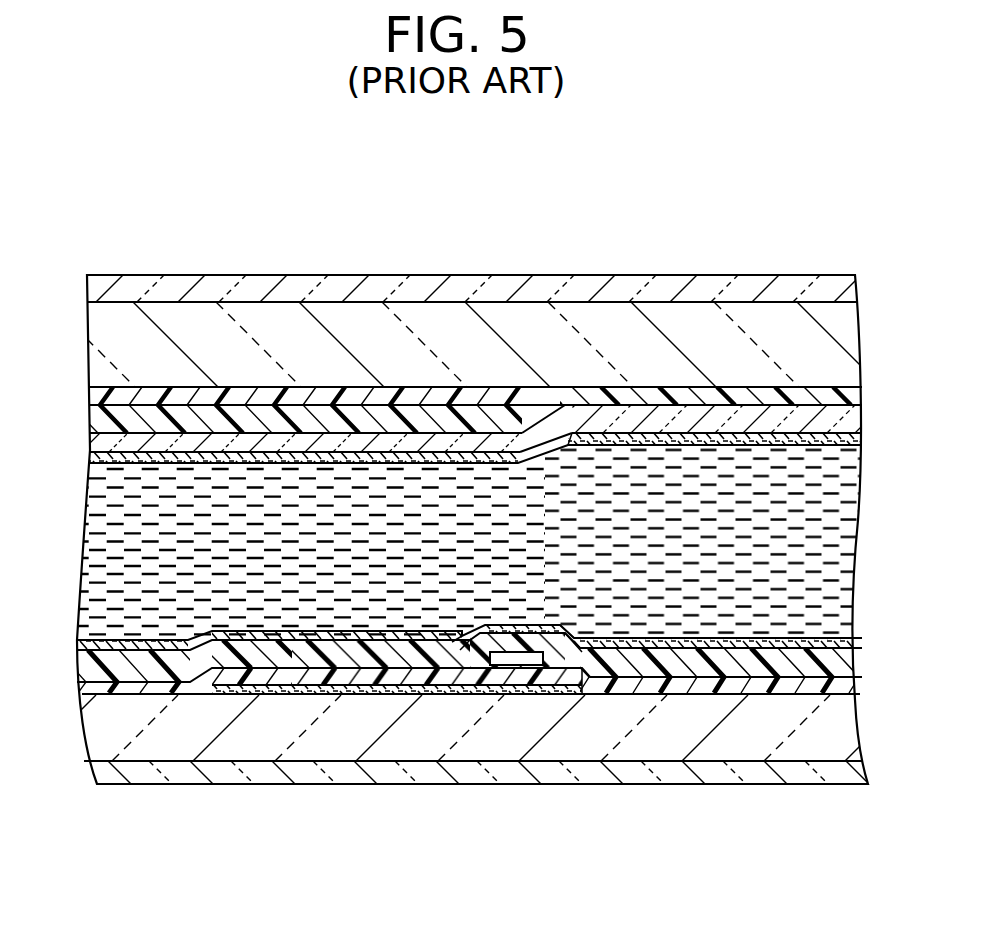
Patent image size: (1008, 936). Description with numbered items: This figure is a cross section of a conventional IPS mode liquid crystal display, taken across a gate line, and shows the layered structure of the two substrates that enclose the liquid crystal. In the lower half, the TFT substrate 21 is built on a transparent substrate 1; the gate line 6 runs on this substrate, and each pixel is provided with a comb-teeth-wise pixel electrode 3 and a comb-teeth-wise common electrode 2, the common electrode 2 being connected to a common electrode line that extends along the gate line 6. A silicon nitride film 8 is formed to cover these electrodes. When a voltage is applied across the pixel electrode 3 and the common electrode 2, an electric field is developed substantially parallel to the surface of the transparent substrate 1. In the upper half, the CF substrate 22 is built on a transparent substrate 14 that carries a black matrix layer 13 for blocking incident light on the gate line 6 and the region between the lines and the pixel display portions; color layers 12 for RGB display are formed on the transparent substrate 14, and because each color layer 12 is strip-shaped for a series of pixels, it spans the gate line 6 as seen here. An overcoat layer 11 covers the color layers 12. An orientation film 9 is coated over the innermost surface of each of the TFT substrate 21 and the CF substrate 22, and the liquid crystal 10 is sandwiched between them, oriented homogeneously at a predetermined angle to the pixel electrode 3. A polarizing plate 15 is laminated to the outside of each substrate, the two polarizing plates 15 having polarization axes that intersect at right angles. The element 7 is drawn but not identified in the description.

The transparent substrate 1 is at (758, 748).
The common electrode 2 is at (542, 690).
The pixel electrode 3 is at (503, 665).
The gate line 6 is at (297, 690).
The insulating film 7 is at (640, 688).
The silicon nitride film 8 is at (705, 672).
The orientation film 9 is at (790, 440).
The liquid crystal 10 is at (712, 460).
The overcoat layer 11 is at (580, 420).
The color layer 12 is at (533, 395).
The black matrix layer 13 is at (243, 405).
The transparent substrate 14 is at (400, 345).
The polarizing plate 15 is at (133, 288).
The TFT substrate 21 is at (855, 822).
The CF substrate 22 is at (650, 217).